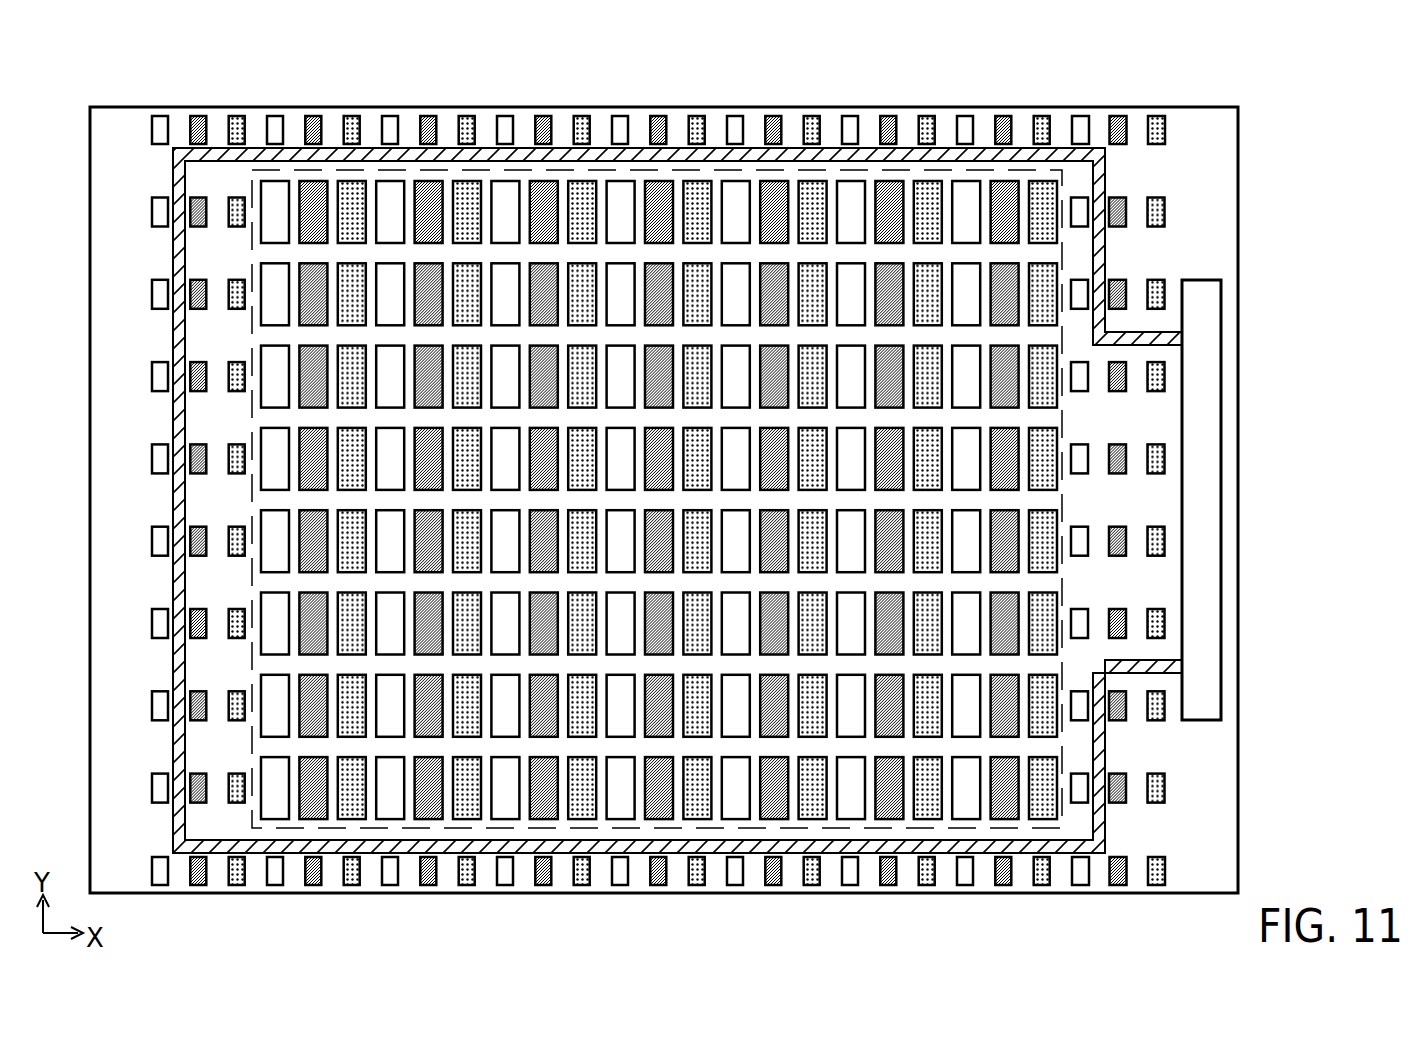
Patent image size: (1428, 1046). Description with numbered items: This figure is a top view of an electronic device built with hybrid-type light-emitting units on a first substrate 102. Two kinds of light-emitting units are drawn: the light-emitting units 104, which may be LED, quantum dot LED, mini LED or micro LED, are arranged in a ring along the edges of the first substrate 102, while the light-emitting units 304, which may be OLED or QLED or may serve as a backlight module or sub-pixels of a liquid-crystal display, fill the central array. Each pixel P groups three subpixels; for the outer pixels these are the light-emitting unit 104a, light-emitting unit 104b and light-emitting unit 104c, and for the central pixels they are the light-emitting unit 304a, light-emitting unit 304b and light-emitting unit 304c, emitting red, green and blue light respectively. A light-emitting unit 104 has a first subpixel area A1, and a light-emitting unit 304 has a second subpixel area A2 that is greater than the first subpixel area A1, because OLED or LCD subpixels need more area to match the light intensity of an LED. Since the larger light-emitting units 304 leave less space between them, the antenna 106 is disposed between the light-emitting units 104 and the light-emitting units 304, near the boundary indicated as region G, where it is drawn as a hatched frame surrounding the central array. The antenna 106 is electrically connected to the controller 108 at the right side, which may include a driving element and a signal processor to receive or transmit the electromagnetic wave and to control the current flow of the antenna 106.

The first substrate 102 is at (1212, 214).
The light-emitting unit 104 is at (766, 534).
The light-emitting unit 104a is at (849, 877).
The light-emitting unit 104b is at (888, 877).
The light-emitting unit 104c is at (931, 877).
The antenna 106 is at (677, 454).
The region G is at (985, 170).
The controller 108 is at (1210, 499).
The light-emitting unit 304 is at (821, 567).
The light-emitting unit 304a is at (621, 803).
The light-emitting unit 304b is at (657, 805).
The light-emitting unit 304c is at (698, 805).
The pixel P is at (1313, 590).
The first subpixel area A1 is at (232, 136).
The second subpixel area A2 is at (318, 212).